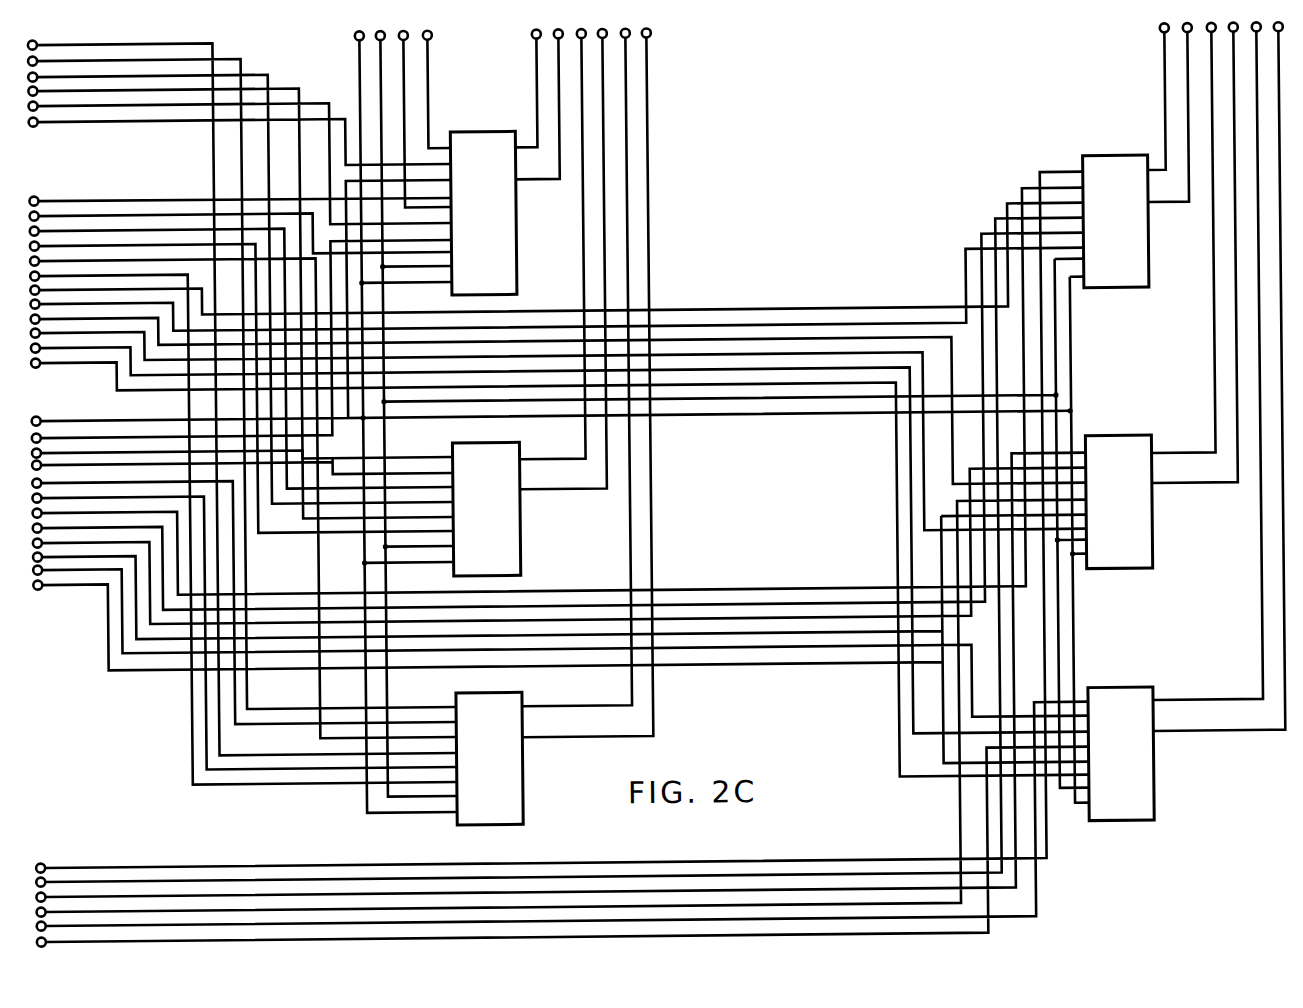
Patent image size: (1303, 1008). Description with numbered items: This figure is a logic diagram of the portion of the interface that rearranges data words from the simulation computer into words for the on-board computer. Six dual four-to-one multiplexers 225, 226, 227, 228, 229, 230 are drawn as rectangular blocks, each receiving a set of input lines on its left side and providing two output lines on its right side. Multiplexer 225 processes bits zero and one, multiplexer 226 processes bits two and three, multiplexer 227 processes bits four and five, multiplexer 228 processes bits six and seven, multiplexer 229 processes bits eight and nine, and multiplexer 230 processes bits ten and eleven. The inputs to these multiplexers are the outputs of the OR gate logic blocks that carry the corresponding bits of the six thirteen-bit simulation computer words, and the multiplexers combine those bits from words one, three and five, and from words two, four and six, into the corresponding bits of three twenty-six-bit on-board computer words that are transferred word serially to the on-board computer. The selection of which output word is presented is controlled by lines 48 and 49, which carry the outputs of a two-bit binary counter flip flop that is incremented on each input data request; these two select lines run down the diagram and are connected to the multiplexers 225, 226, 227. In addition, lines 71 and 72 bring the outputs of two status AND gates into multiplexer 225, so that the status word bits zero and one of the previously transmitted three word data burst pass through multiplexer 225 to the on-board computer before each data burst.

The multiplexer 225 is at (486, 137).
The multiplexer 226 is at (513, 451).
The multiplexer 227 is at (519, 706).
The multiplexer 228 is at (1110, 165).
The multiplexer 229 is at (1144, 455).
The multiplexer 230 is at (1144, 706).
The line 49 is at (361, 38).
The line 48 is at (384, 38).
The line 71 is at (409, 38).
The line 72 is at (433, 38).